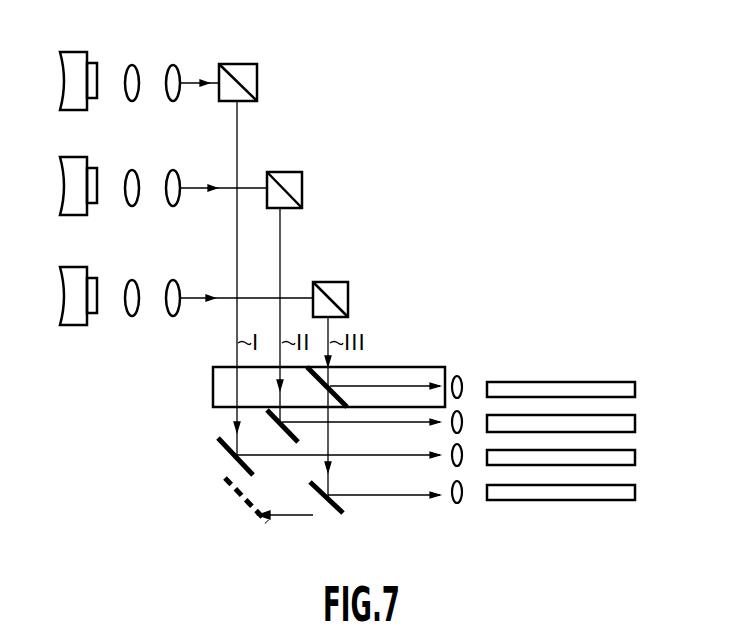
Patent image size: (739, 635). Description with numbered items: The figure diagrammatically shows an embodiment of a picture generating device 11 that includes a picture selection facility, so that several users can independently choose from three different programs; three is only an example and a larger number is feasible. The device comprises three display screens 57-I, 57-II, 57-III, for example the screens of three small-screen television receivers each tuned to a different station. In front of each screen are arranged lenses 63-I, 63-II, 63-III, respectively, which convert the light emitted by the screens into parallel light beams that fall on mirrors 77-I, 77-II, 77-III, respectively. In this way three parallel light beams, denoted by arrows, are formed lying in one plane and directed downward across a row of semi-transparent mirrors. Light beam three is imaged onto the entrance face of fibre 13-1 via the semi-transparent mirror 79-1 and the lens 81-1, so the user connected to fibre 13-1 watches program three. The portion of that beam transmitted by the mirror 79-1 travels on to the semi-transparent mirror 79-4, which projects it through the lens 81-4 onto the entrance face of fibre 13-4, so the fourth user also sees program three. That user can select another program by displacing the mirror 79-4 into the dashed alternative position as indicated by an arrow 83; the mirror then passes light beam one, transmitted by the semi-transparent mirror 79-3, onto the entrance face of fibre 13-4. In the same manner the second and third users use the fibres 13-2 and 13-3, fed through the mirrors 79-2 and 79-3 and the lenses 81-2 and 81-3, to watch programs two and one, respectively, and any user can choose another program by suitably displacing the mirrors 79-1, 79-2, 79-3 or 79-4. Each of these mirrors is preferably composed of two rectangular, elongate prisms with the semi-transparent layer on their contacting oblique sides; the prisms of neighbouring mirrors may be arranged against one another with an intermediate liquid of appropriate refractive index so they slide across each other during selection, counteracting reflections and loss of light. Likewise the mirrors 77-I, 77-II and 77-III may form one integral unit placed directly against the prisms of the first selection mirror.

The picture generating device 11 is at (364, 120).
The display screen 57-I is at (75, 63).
The display screen 57-II is at (75, 170).
The display screen 57-III is at (75, 282).
The lens 63-I is at (168, 74).
The lens 63-II is at (168, 180).
The lens 63-III is at (168, 290).
The mirror 77-I is at (250, 92).
The mirror 77-II is at (296, 198).
The mirror 77-III is at (343, 306).
The semi-transparent mirror 79-1 is at (333, 385).
The semi-transparent mirror 79-2 is at (278, 421).
The semi-transparent mirror 79-3 is at (226, 456).
The semi-transparent mirror 79-4 is at (331, 515).
The lens 81-1 is at (461, 380).
The lens 81-2 is at (452, 431).
The lens 81-3 is at (452, 464).
The lens 81-4 is at (452, 502).
The fibre 13-1 is at (627, 392).
The fibre 13-2 is at (625, 427).
The fibre 13-3 is at (625, 461).
The fibre 13-4 is at (625, 495).
The arrow 83 is at (287, 517).